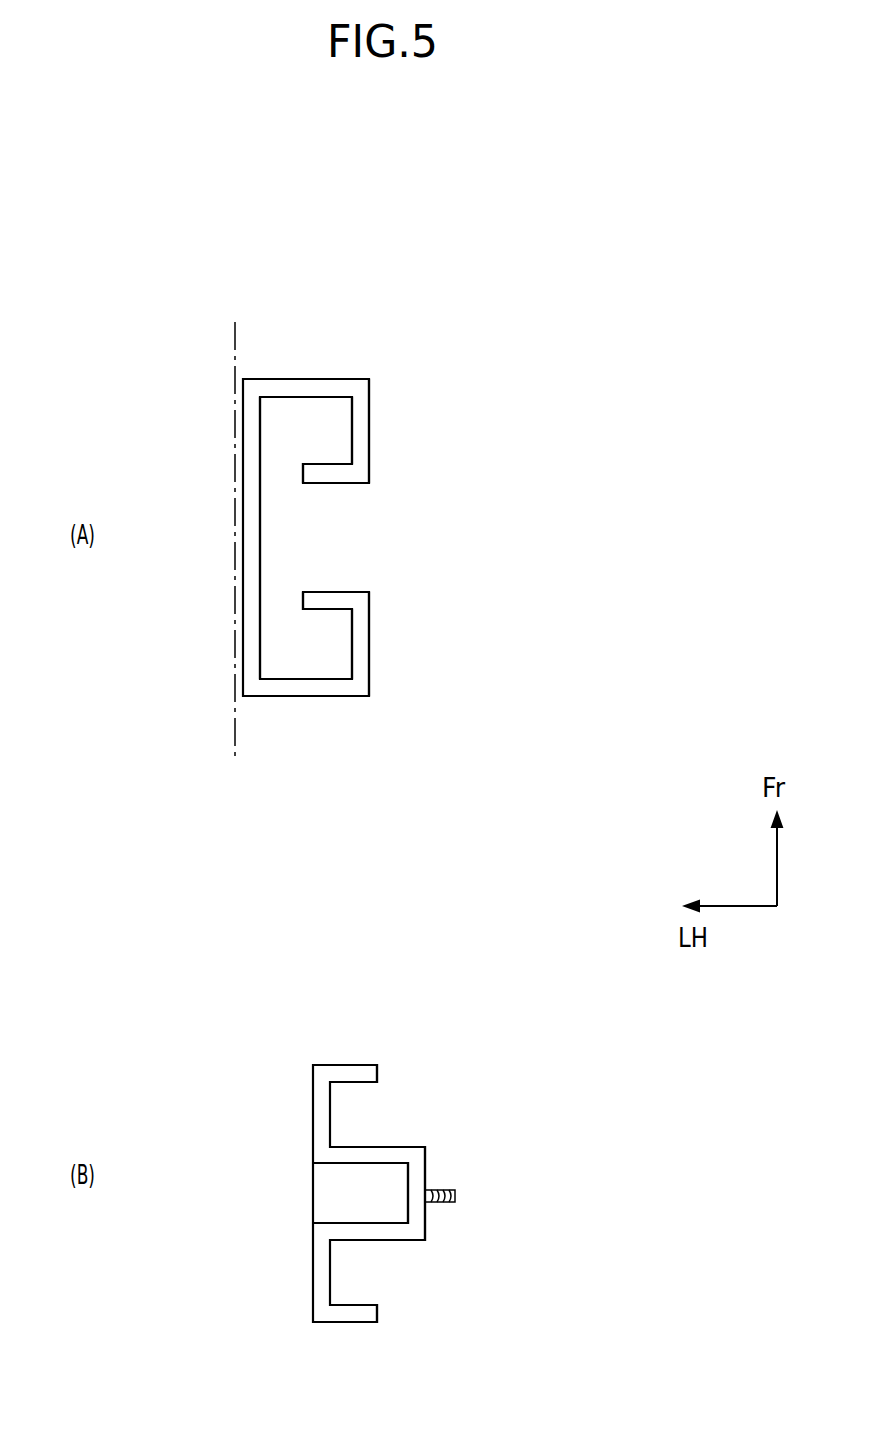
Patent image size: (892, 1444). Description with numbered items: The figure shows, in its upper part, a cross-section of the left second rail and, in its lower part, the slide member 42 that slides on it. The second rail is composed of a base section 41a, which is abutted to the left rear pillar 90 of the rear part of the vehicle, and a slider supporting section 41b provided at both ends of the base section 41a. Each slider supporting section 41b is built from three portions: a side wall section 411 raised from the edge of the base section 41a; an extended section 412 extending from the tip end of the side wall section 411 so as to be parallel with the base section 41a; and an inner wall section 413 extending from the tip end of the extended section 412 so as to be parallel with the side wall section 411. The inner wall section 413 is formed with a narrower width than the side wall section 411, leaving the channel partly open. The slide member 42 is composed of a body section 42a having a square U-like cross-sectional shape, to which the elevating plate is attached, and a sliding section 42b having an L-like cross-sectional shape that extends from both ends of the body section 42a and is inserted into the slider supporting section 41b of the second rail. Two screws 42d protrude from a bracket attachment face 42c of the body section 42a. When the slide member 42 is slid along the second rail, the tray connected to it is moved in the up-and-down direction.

The side wall section 411 is at (313, 379).
The extended section 412 is at (360, 428).
The inner wall section 413 is at (340, 485).
The base section 41a is at (276, 544).
The slider supporting section 41b is at (430, 292).
The left rear pillar 90 is at (238, 725).
The slide member 42 is at (458, 973).
The body section 42a is at (434, 1152).
The sliding section 42b is at (366, 1058).
The bracket attachment face 42c is at (425, 1220).
The screw 42d is at (423, 1194).